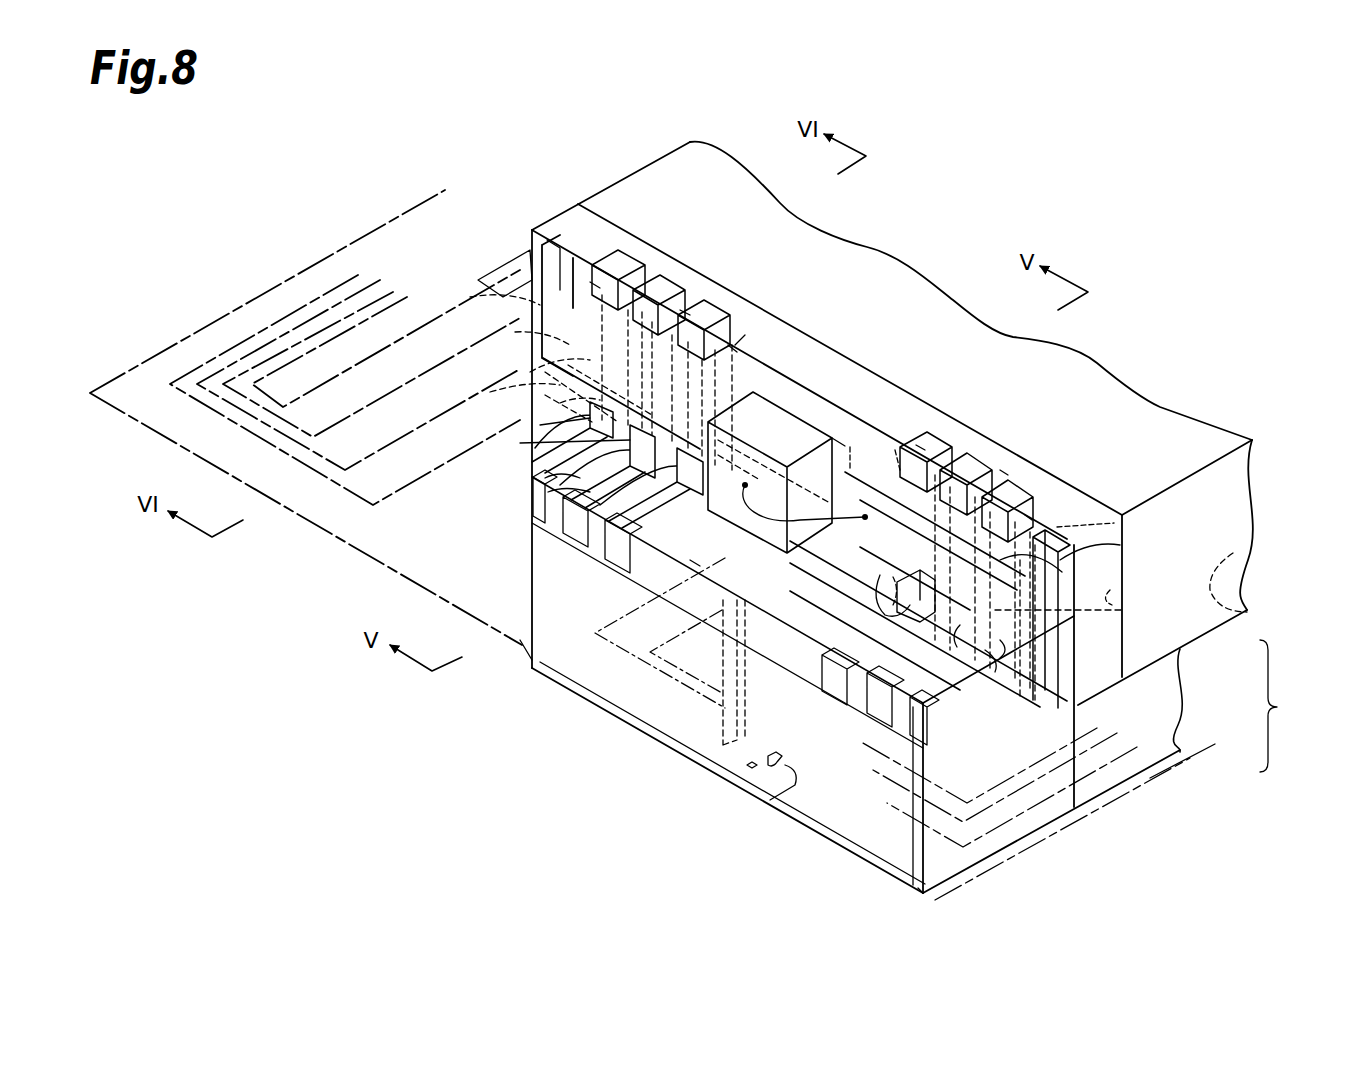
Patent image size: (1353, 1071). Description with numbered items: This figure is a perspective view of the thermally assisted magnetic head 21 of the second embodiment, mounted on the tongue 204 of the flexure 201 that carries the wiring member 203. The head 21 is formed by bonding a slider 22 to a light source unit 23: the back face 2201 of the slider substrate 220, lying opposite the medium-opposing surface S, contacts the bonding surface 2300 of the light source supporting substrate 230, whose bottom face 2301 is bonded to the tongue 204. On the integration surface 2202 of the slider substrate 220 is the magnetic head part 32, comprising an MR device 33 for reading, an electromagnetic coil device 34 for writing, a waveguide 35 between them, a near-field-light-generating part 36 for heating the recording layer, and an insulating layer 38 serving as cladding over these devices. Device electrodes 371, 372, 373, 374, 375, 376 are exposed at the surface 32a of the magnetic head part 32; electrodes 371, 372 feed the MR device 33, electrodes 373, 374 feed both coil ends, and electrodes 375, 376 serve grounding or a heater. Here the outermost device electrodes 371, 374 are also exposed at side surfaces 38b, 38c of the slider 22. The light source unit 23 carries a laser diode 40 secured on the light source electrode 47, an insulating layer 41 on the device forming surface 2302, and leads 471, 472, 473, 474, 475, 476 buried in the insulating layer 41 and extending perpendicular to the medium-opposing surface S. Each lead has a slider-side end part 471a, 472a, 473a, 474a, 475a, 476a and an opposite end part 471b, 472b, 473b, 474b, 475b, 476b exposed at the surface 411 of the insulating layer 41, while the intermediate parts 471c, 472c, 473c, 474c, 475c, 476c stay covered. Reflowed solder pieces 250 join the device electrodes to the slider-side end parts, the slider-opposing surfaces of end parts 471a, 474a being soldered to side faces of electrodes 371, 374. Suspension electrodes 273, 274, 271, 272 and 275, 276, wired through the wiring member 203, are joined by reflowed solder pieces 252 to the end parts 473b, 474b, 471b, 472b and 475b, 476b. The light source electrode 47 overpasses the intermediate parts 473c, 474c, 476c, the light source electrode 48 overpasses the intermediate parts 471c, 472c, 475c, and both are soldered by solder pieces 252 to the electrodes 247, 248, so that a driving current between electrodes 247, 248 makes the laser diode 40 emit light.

The flexure 201 is at (180, 337).
The wiring member 203 is at (297, 302).
The tongue 204 is at (604, 200).
The light source supporting substrate 230 is at (645, 195).
The bonding surface 2300 is at (1247, 613).
The bottom face 2301 is at (1130, 390).
The device forming surface 2302 is at (1138, 580).
The light source unit 23 is at (1170, 632).
The slider 22 is at (1150, 727).
The back face 2201 is at (1233, 553).
The integration surface 2202 is at (1060, 817).
The slider substrate 220 is at (1120, 775).
The thermally assisted magnetic head 21 is at (1283, 706).
The magnetic head part 32 is at (995, 875).
The surface of the magnetic head part 32a is at (690, 560).
The MR device 33 is at (795, 775).
The electromagnetic coil device 34 is at (750, 767).
The waveguide 35 is at (680, 680).
The near-field-light-generating part 36 is at (775, 770).
The insulating layer 38 is at (950, 860).
The surface of the slider 38b is at (918, 888).
The surface of the slider 38c is at (520, 640).
The device electrode 371 is at (908, 740).
The device electrode 372 is at (878, 715).
The device electrode 373 is at (570, 545).
The device electrode 374 is at (540, 520).
The device electrode 375 is at (840, 690).
The device electrode 376 is at (615, 560).
The laser diode 40 is at (803, 430).
The insulating layer 41 is at (850, 440).
The surface of the insulating layer 411 is at (548, 257).
The light source electrode 47 is at (552, 262).
The light source electrode 48 is at (1062, 640).
The electrode 247 is at (505, 258).
The electrode 248 is at (1120, 545).
The reflowed solder pieces 250 is at (550, 505).
The reflowed solder pieces 252 is at (656, 258).
The electrode 271 is at (1114, 523).
The electrode 272 is at (897, 580).
The electrode 273 is at (515, 332).
The electrode 274 is at (470, 297).
The electrode 275 is at (850, 447).
The electrode 276 is at (490, 392).
The lead 471 is at (1020, 490).
The end part 471a is at (1010, 650).
The end part 471b is at (1032, 520).
The intermediate part 471c is at (1062, 572).
The lead 472 is at (975, 455).
The end part 472a is at (1000, 665).
The end part 472b is at (1000, 470).
The intermediate part 472c is at (1120, 607).
The lead 473 is at (663, 290).
The end part 473a is at (520, 443).
The end part 473b is at (680, 310).
The intermediate part 473c is at (560, 403).
The lead 474 is at (620, 268).
The end part 474a is at (540, 425).
The end part 474b is at (590, 282).
The intermediate part 474c is at (530, 372).
The lead 475 is at (930, 430).
The end part 475a is at (943, 700).
The end part 475b is at (916, 445).
The intermediate part 475c is at (895, 450).
The lead 476 is at (723, 310).
The end part 476a is at (655, 587).
The end part 476b is at (745, 335).
The intermediate part 476c is at (737, 352).
The medium-opposing surface S is at (1003, 855).